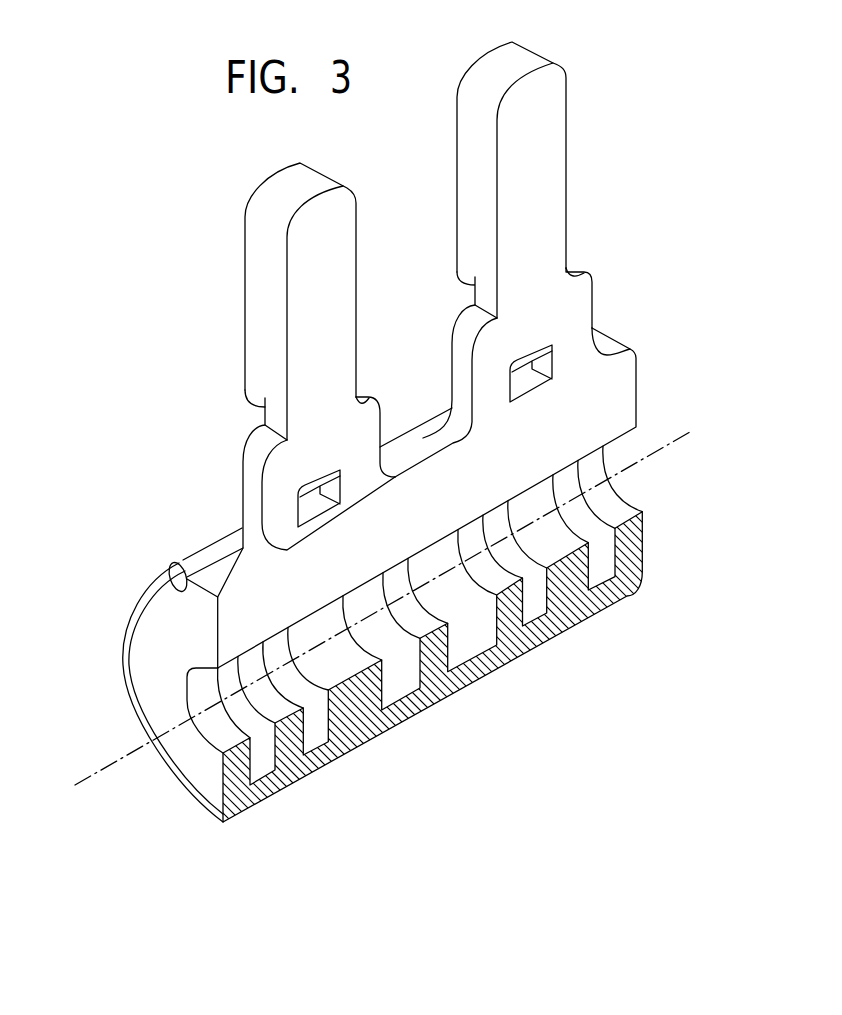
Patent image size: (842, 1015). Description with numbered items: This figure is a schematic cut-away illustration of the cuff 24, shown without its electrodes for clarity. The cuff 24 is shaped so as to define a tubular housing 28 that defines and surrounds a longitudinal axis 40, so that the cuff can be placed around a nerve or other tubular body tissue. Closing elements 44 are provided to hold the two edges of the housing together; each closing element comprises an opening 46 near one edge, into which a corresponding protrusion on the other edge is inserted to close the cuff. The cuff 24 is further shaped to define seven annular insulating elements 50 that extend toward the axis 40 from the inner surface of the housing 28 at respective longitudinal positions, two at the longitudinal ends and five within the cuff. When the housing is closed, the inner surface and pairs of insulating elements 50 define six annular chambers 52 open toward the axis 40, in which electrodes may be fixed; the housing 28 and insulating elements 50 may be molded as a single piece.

The cuff 24 is at (156, 543).
The tubular housing 28 is at (216, 553).
The longitudinal axis 40 is at (113, 760).
The closing elements 44 is at (264, 313).
The opening 46 is at (318, 505).
The annular insulating elements 50 is at (235, 774).
The chambers 52 is at (257, 773).